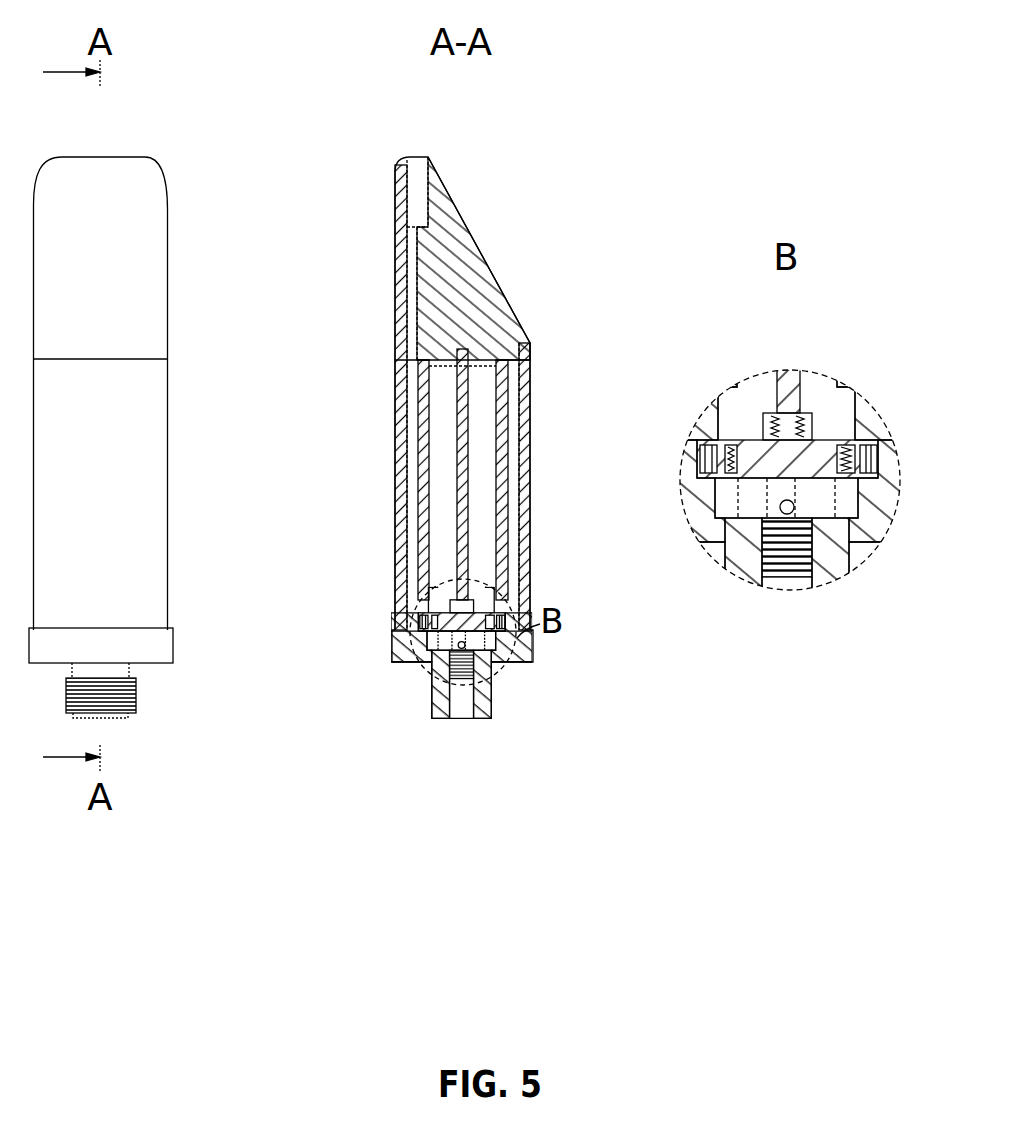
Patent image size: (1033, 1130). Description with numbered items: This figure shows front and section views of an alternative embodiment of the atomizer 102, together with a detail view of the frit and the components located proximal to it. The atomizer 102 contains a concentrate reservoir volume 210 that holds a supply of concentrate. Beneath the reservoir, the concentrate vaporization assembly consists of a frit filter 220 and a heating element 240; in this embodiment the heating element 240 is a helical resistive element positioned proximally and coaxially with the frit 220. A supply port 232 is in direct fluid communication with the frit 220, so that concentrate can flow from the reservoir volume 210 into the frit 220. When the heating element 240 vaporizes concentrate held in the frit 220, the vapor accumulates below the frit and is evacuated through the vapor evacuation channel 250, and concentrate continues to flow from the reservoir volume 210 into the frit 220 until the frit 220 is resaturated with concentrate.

The atomizer 102 is at (168, 350).
The concentrate reservoir volume 210 is at (485, 395).
The vapor evacuation channel 250 is at (515, 440).
The frit filter 220 is at (755, 467).
The supply port 232 is at (820, 437).
The heating element 240 is at (845, 455).